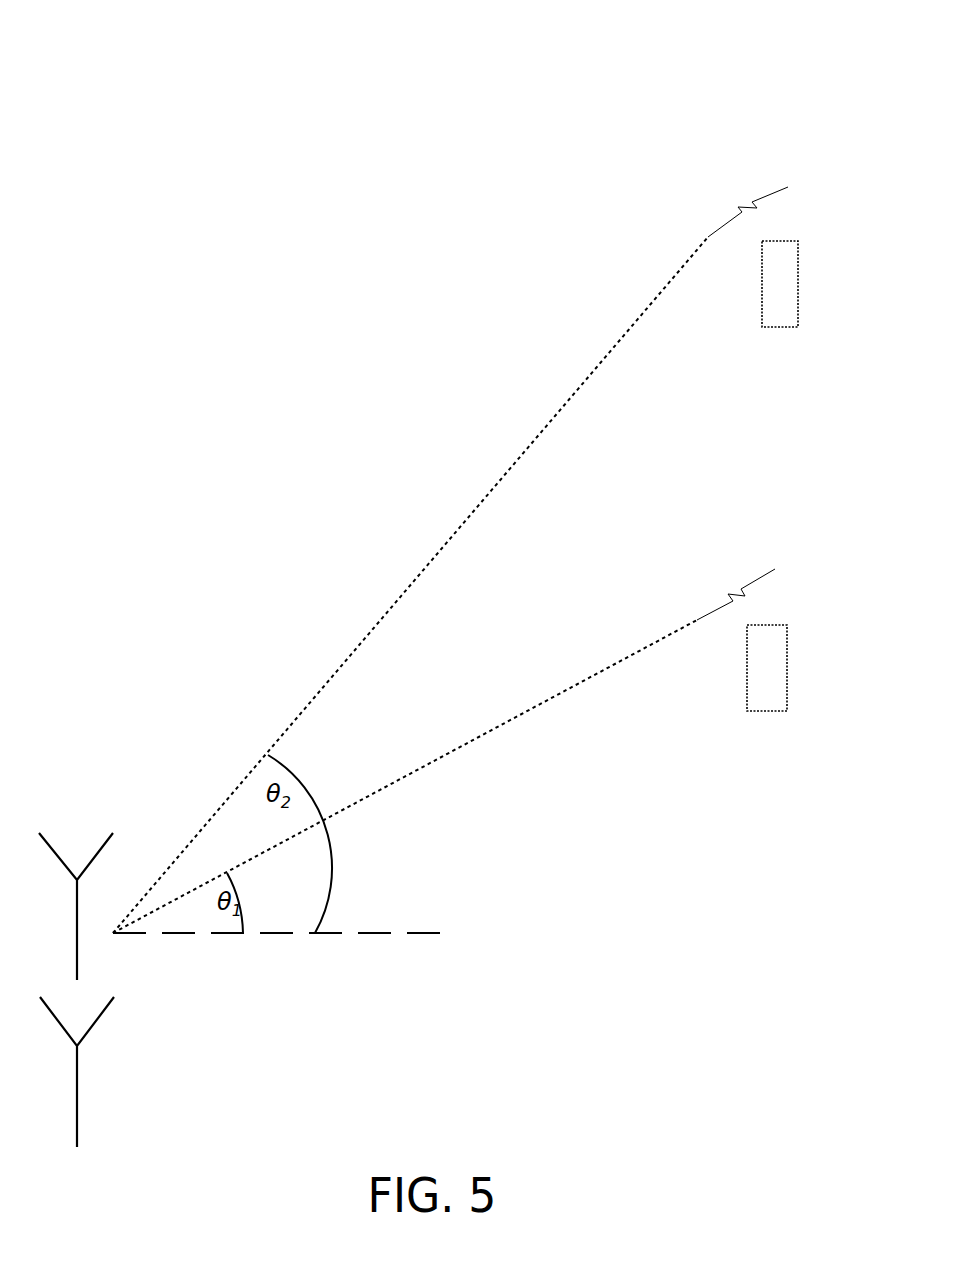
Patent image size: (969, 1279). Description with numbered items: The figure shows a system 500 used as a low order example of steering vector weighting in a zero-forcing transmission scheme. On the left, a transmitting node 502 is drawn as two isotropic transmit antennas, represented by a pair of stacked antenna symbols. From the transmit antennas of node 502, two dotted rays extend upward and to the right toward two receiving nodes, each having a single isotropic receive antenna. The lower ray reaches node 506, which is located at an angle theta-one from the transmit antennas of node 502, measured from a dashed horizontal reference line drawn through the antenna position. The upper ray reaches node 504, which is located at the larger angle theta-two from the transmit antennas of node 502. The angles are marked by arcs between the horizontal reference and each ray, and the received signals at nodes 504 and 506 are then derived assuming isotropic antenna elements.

The system 500 is at (148, 108).
The node 502 is at (77, 807).
The node 504 is at (798, 241).
The node 506 is at (787, 625).